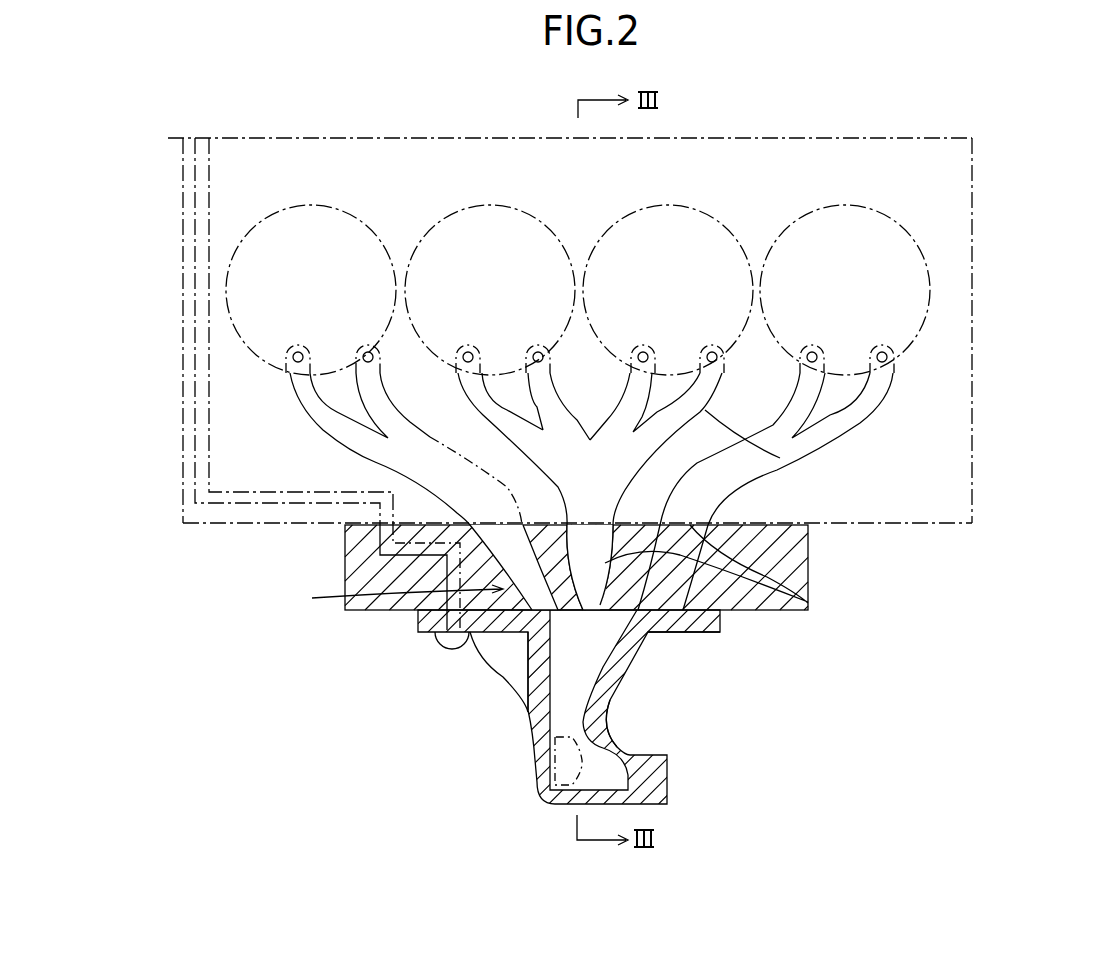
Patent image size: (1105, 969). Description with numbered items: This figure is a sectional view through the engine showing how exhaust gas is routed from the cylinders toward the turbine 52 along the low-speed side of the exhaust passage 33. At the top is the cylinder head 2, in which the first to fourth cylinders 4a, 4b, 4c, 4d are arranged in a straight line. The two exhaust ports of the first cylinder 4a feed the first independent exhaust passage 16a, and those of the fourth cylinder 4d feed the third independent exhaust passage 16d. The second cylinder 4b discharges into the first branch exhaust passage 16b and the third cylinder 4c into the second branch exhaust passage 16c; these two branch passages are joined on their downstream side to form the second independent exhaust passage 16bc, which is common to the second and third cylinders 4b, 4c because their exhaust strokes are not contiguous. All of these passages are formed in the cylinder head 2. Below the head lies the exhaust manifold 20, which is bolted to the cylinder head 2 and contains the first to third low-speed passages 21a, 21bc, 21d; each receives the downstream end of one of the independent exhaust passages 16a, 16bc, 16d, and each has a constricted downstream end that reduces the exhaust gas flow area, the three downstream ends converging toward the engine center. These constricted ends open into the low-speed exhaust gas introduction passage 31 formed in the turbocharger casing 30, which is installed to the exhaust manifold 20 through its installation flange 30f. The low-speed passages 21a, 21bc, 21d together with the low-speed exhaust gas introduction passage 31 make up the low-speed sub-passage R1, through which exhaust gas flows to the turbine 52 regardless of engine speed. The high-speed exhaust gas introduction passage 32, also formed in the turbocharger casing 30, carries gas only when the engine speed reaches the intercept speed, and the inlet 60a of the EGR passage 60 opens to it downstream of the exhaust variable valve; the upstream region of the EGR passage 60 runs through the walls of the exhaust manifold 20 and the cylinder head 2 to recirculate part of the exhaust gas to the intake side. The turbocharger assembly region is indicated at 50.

The cylinder head 2 is at (927, 407).
The first cylinder 4a is at (324, 220).
The second cylinder 4b is at (501, 220).
The third cylinder 4c is at (678, 220).
The fourth cylinder 4d is at (856, 220).
The EGR passage 60 is at (193, 253).
The first independent exhaust passage 16a is at (300, 405).
The first branch exhaust passage 16b is at (470, 400).
The second branch exhaust passage 16c is at (790, 463).
The third independent exhaust passage 16d is at (897, 390).
The second independent exhaust passage 16bc is at (560, 490).
The exhaust manifold 20 is at (800, 560).
The first low-speed passage 21a is at (490, 558).
The third low-speed passage 21d is at (808, 602).
The second low-speed passage 21bc is at (720, 617).
The exhaust passage 33 is at (387, 597).
The turbocharger casing 30 is at (666, 698).
The installation flange 30f is at (735, 645).
The low-speed exhaust gas introduction passage 31 is at (602, 645).
The low-speed sub-passage R1 is at (645, 652).
The high-speed exhaust gas introduction passage 32 is at (483, 667).
The intake device 50 is at (443, 734).
The turbine 52 is at (527, 763).
The inlet 60a is at (463, 640).